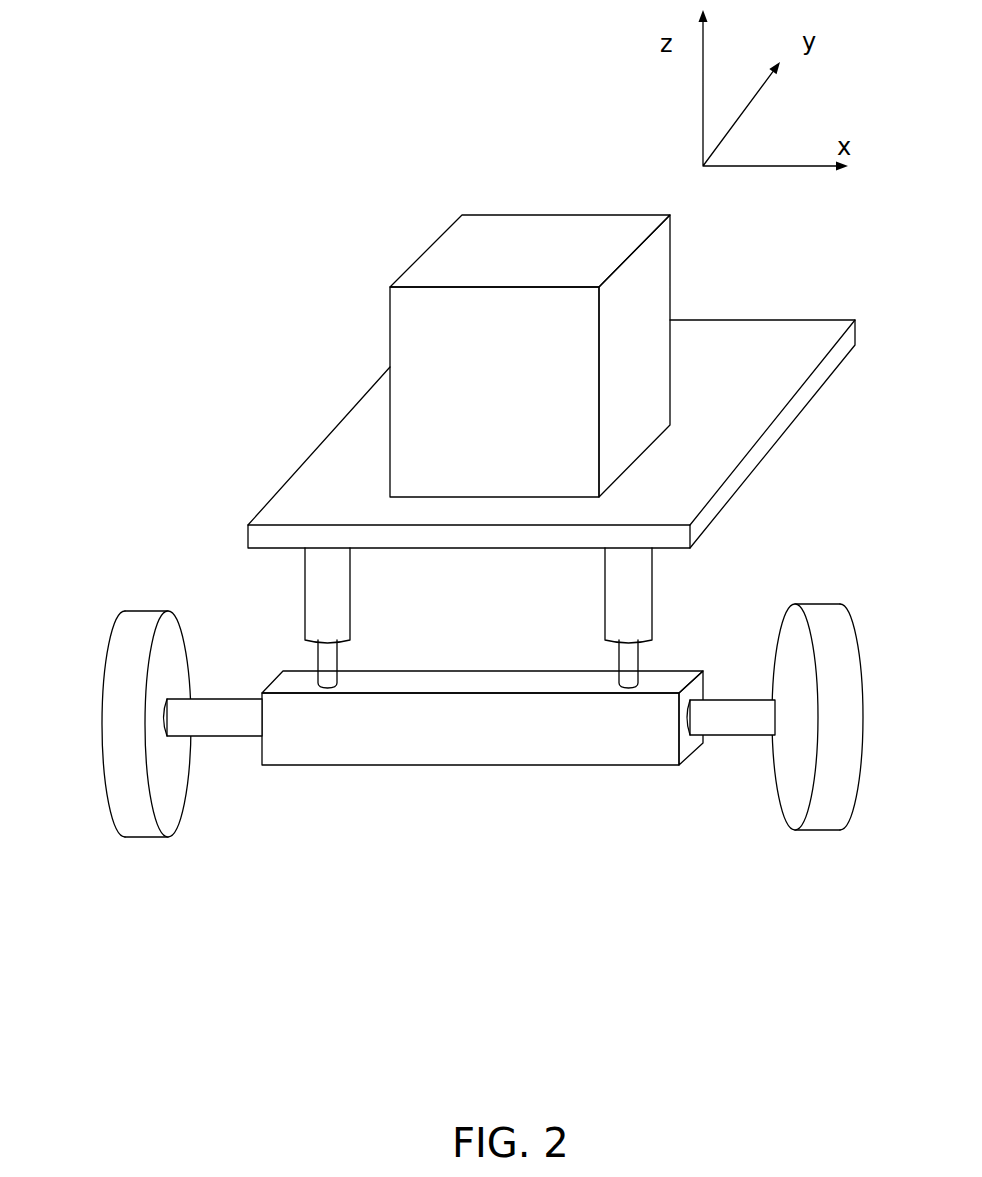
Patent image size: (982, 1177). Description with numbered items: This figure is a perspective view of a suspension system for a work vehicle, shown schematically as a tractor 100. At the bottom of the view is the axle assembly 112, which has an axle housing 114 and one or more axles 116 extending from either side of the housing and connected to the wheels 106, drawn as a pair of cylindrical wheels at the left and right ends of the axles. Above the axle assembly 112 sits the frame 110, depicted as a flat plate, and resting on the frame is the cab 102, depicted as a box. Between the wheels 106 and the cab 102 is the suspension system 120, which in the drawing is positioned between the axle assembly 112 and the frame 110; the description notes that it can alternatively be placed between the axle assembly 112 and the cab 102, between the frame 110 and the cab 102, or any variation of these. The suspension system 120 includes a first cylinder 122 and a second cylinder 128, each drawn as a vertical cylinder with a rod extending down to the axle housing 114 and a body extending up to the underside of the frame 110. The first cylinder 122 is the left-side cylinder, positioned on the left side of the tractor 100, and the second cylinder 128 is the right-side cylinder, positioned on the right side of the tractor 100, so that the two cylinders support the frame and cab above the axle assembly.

The tractor 100 is at (195, 328).
The cab 102 is at (423, 352).
The wheels 106 is at (108, 660).
The frame 110 is at (783, 337).
The axle assembly 112 is at (347, 912).
The axle housing 114 is at (627, 753).
The axles 116 is at (213, 738).
The suspension system 120 is at (153, 537).
The first cylinder 122 is at (305, 637).
The second cylinder 128 is at (605, 632).